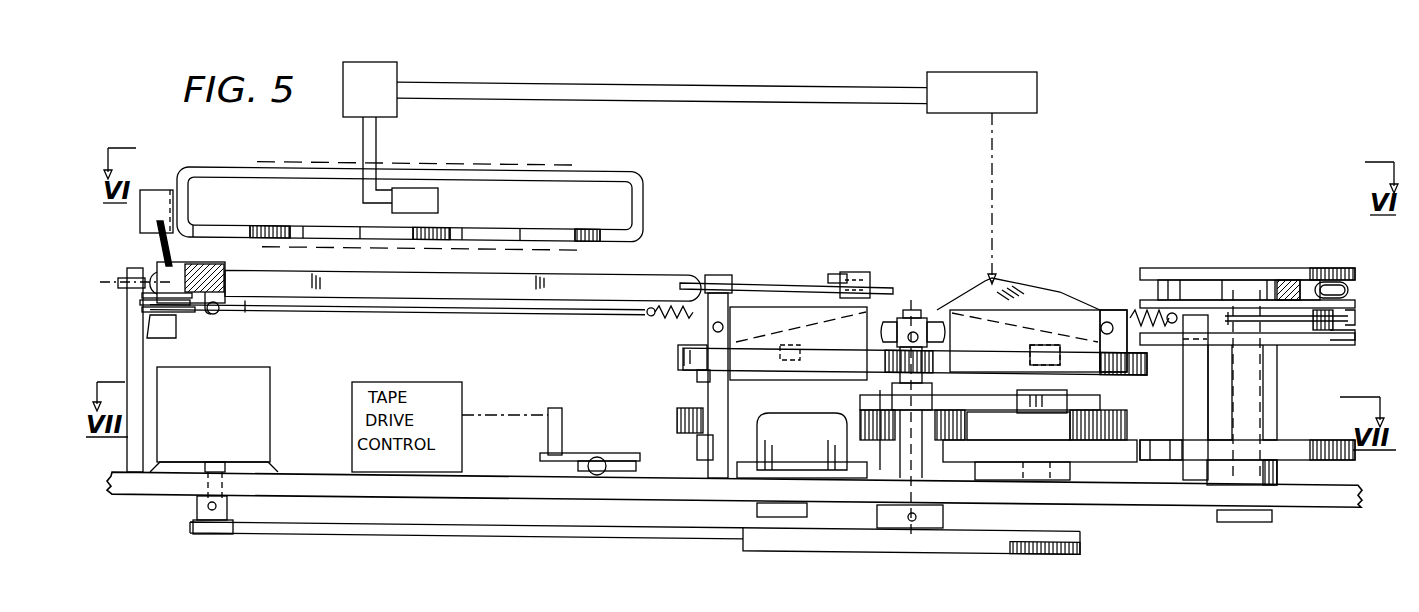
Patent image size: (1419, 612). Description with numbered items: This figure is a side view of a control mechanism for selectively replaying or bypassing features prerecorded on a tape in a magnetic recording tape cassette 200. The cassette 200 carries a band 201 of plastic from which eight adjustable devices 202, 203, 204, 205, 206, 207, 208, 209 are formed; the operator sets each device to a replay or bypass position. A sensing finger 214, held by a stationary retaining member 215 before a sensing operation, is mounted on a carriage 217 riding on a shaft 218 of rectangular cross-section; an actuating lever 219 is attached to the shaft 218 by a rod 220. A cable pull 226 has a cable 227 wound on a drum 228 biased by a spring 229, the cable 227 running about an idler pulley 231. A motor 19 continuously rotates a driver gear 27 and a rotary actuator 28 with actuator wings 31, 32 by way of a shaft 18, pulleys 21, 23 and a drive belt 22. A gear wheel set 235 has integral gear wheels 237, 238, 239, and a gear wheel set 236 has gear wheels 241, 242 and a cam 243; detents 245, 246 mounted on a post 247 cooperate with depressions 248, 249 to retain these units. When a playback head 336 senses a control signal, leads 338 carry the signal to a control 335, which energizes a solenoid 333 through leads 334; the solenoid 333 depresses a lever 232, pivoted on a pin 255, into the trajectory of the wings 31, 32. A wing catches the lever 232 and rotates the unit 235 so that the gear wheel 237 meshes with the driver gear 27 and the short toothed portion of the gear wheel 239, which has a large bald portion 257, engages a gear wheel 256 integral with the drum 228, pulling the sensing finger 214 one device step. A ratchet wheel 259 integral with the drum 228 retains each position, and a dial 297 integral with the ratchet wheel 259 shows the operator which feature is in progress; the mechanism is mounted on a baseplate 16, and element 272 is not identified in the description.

The baseplate 16 is at (326, 470).
The shaft 18 is at (918, 544).
The motor 19 is at (270, 406).
The pulley 21 is at (197, 511).
The drive belt 22 is at (297, 531).
The pulley 23 is at (742, 541).
The driver gear 27 is at (870, 348).
The rotary actuator 28 is at (908, 305).
The actuator wing 31 is at (928, 315).
The actuator wing 32 is at (911, 305).
The magnetic recording tape cassette 200 is at (522, 161).
The band 201 is at (637, 176).
The device 202 is at (220, 214).
The device 203 is at (270, 238).
The device 204 is at (335, 210).
The device 205 is at (392, 238).
The device 206 is at (450, 213).
The device 207 is at (490, 238).
The device 208 is at (570, 212).
The device 209 is at (602, 236).
The sensing finger 214 is at (160, 247).
The stationary retaining member 215 is at (155, 190).
The carriage 217 is at (209, 312).
The shaft 218 is at (512, 292).
The actuating lever 219 is at (848, 272).
The rod 220 is at (794, 282).
The cable pull 226 is at (384, 313).
The cable 227 is at (1348, 316).
The drum 228 is at (1340, 339).
The spring 229 is at (1158, 319).
The idler pulley 231 is at (178, 318).
The lever 232 is at (1010, 290).
The gear wheel set 235 is at (1122, 310).
The gear wheel set 236 is at (674, 353).
The gear wheel 237 is at (1080, 356).
The gear wheel 238 is at (1125, 431).
The gear wheel 239 is at (1090, 456).
The gear wheel 241 is at (700, 371).
The gear wheel 242 is at (675, 420).
The cam 243 is at (695, 450).
The detent 245 is at (998, 439).
The detent 246 is at (839, 439).
The post 247 is at (880, 471).
The depression 248 is at (1070, 405).
The depression 249 is at (738, 463).
The pin 255 is at (1122, 292).
The gear wheel 256 is at (1343, 456).
The bald portion 257 is at (1003, 533).
The ratchet wheel 259 is at (1198, 284).
The pin 272 is at (813, 283).
The dial 297 is at (1297, 268).
The solenoid 333 is at (1040, 95).
The leads 334 is at (636, 90).
The control 335 is at (383, 62).
The playback head 336 is at (432, 188).
The leads 338 is at (377, 140).